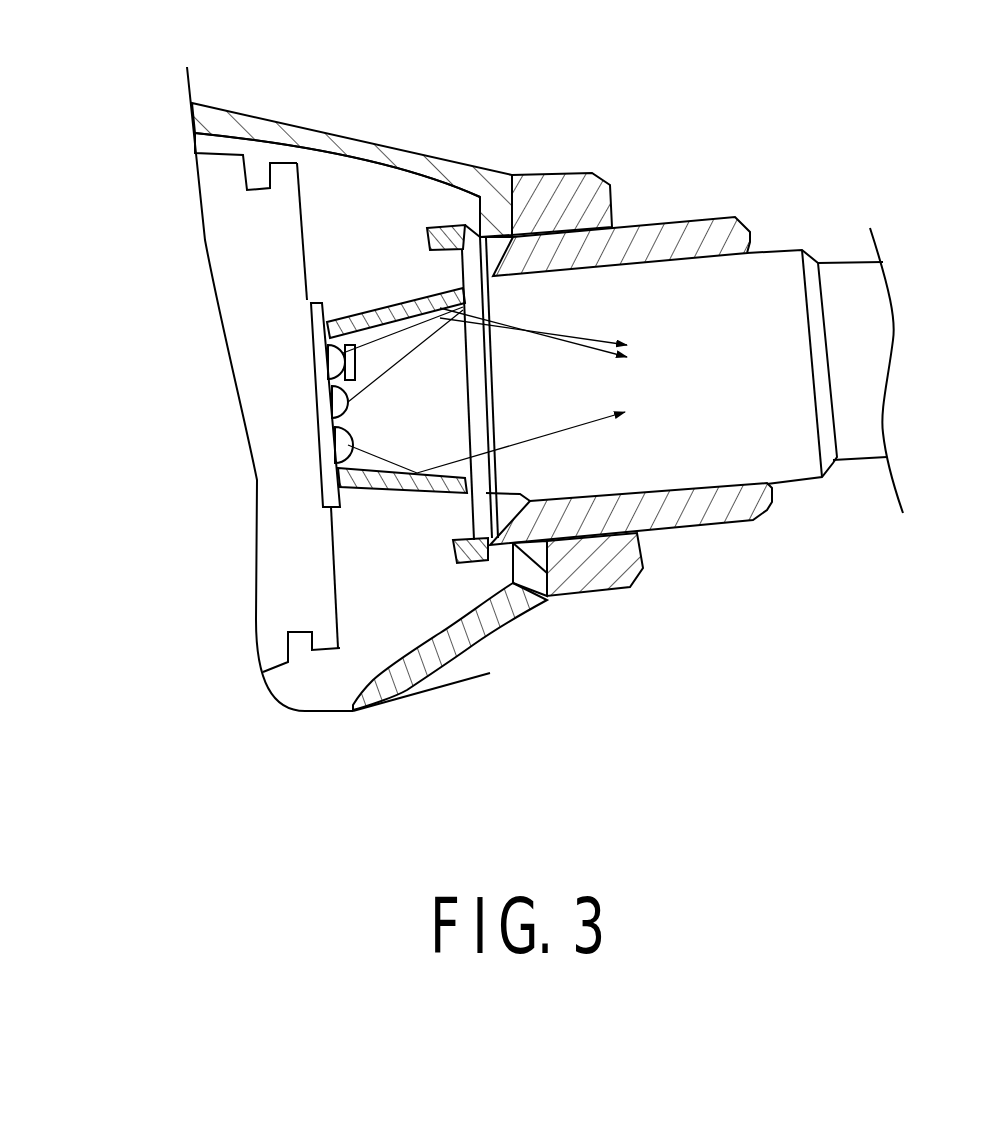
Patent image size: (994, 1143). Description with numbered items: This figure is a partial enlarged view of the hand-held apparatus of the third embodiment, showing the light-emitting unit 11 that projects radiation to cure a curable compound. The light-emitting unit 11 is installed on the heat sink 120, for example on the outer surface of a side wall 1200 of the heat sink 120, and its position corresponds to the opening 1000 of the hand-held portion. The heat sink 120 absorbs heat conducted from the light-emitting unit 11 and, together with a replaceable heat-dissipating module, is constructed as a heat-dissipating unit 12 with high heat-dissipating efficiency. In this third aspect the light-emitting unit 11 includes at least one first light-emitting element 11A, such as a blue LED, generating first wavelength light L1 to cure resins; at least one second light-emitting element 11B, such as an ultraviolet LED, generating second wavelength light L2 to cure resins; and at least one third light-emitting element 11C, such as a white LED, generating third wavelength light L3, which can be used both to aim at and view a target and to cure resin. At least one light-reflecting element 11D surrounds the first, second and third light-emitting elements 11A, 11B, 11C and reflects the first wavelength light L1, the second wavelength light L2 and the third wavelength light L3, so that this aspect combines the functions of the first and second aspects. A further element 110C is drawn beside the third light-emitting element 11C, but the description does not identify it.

The light-emitting unit 11 is at (102, 298).
The first light-emitting element 11A is at (332, 403).
The second light-emitting element 11B is at (334, 445).
The third light-emitting element 11C is at (330, 361).
The light-reflecting element 11D is at (400, 318).
The light guide 110C is at (368, 367).
The heat-dissipating unit 12 is at (228, 153).
The heat sink 120 is at (285, 207).
The side wall 1200 is at (307, 263).
The opening 1000 is at (585, 598).
The first wavelength light L1 is at (510, 355).
The second wavelength light L2 is at (511, 432).
The third wavelength light L3 is at (508, 331).